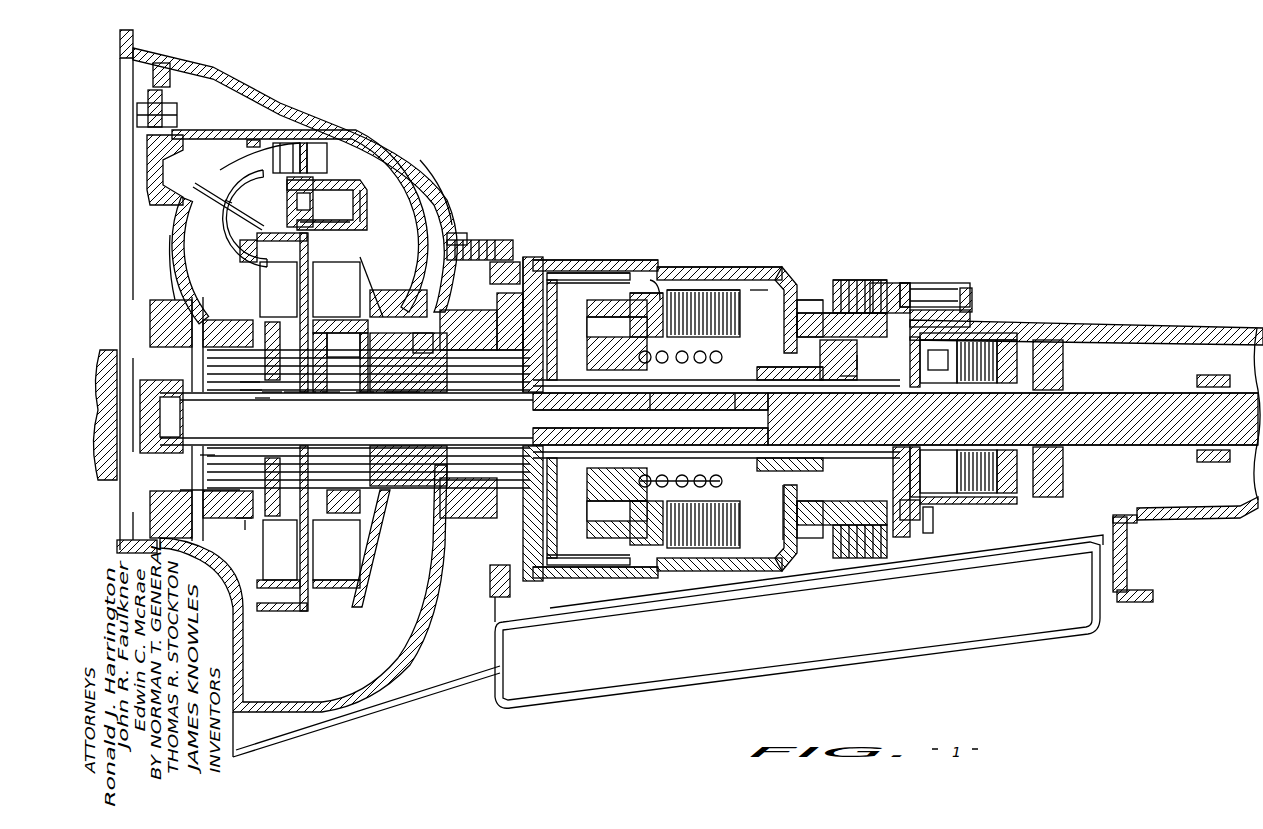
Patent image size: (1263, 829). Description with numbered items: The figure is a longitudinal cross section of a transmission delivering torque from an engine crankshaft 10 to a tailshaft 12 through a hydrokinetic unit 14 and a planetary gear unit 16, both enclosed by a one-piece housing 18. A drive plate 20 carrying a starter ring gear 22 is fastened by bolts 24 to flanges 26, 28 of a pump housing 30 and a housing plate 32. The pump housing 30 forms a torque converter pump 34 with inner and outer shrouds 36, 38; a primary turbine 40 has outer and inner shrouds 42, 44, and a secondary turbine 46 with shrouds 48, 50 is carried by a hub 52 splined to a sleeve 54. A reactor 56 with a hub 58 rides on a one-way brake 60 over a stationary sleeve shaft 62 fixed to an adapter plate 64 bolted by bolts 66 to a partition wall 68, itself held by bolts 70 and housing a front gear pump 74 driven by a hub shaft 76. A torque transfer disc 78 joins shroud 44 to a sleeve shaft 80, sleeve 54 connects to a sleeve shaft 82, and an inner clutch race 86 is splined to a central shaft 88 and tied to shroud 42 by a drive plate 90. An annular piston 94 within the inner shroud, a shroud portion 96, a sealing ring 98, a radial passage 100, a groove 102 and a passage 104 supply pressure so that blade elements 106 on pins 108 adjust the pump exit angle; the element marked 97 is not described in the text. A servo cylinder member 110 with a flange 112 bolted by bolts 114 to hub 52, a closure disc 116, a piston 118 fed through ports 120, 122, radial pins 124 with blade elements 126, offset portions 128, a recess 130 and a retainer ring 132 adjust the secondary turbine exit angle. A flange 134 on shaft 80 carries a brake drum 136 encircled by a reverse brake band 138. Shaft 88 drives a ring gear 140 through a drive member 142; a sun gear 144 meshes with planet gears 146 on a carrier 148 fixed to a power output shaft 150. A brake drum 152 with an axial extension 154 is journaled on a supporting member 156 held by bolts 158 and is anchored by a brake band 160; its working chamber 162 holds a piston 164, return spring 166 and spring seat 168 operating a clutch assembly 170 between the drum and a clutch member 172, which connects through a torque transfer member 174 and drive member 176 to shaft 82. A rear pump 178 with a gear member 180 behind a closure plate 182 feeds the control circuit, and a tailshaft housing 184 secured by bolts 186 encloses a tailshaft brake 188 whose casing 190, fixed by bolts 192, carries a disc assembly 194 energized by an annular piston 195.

The engine crankshaft 10 is at (107, 358).
The power output shaft 12 is at (1125, 392).
The hydrokinetic unit 14 is at (408, 150).
The planetary gear unit 16 is at (660, 552).
The housing 18 is at (370, 125).
The drive plate 20 is at (128, 194).
The starter ring gear 22 is at (165, 65).
The bolts 24 is at (178, 117).
The flange 26 is at (168, 100).
The flange 28 is at (150, 133).
The pump housing 30 is at (265, 130).
The housing plate 32 is at (150, 242).
The torque converter pump 34 is at (366, 216).
The inner pump shroud 36 is at (352, 194).
The outer pump shroud 38 is at (372, 248).
The primary turbine member 40 is at (247, 155).
The outer shroud 42 is at (238, 160).
The inner shroud 44 is at (247, 206).
The secondary turbine member 46 is at (230, 218).
The shroud 48 is at (213, 226).
The shroud 50 is at (242, 260).
The hub 52 is at (246, 320).
The sleeve 54 is at (330, 392).
The reactor 56 is at (336, 286).
The hub 58 is at (355, 335).
The one-way brake 60 is at (335, 330).
The stationary sleeve shaft 62 is at (395, 392).
The adapter plate 64 is at (537, 282).
The bolts 66 is at (505, 265).
The transverse partition wall 68 is at (455, 238).
The bolts 70 is at (480, 242).
The positive displacement gear pump 74 is at (490, 390).
The hub shaft 76 is at (447, 390).
The torque transfer disc 78 is at (300, 262).
The sleeve shaft 80 is at (365, 392).
The sleeve shaft 82 is at (412, 392).
The inner clutch race 86 is at (156, 338).
The shaft 88 is at (173, 416).
The drive plate 90 is at (165, 262).
The annular piston 94 is at (282, 224).
The portion 96 is at (380, 578).
The turbine hub block 97 is at (315, 185).
The annular sealing ring 98 is at (385, 300).
The radial passage 100 is at (336, 550).
The groove 102 is at (341, 511).
The passage 104 is at (360, 556).
The blade elements 106 is at (318, 143).
The mounting pins 108 is at (286, 143).
The servo cylinder member 110 is at (282, 528).
The radial flange 112 is at (242, 520).
The bolts 114 is at (250, 525).
The disc 116 is at (272, 392).
The annular piston 118 is at (262, 398).
The port 120 is at (308, 392).
The port 122 is at (292, 392).
The radial pins 124 is at (325, 236).
The blade elements 126 is at (278, 289).
The offset portion 128 is at (246, 382).
The recess 130 is at (252, 390).
The retainer ring 132 is at (207, 455).
The flange 134 is at (508, 450).
The brake drum 136 is at (598, 273).
The reverse brake band 138 is at (578, 260).
The ring gear 140 is at (662, 280).
The drive member 142 is at (617, 509).
The sun gear 144 is at (650, 439).
The planet gears 146 is at (585, 568).
The carrier 148 is at (650, 401).
The power output shaft 150 is at (845, 380).
The brake drum 152 is at (758, 290).
The axial extension 154 is at (749, 400).
The supporting member 156 is at (789, 375).
The bolts 158 is at (852, 288).
The friction brake band 160 is at (737, 267).
The annular working chamber 162 is at (810, 313).
The annular piston 164 is at (800, 292).
The piston return spring 166 is at (650, 419).
The spring seat 168 is at (665, 401).
The multiple disc clutch assembly 170 is at (702, 290).
The clutch member 172 is at (687, 464).
The torque transfer member 174 is at (646, 292).
The drive member 176 is at (617, 327).
The positive displacement pump 178 is at (800, 535).
The gear member 180 is at (848, 380).
The closure plate 182 is at (860, 362).
The tailshaft housing 184 is at (1115, 322).
The bolts 186 is at (935, 285).
The tailshaft friction brake 188 is at (1019, 343).
The casing 190 is at (1005, 505).
The bolts 192 is at (935, 532).
The multiple disc brake assembly 194 is at (1013, 418).
The annular piston 195 is at (940, 506).